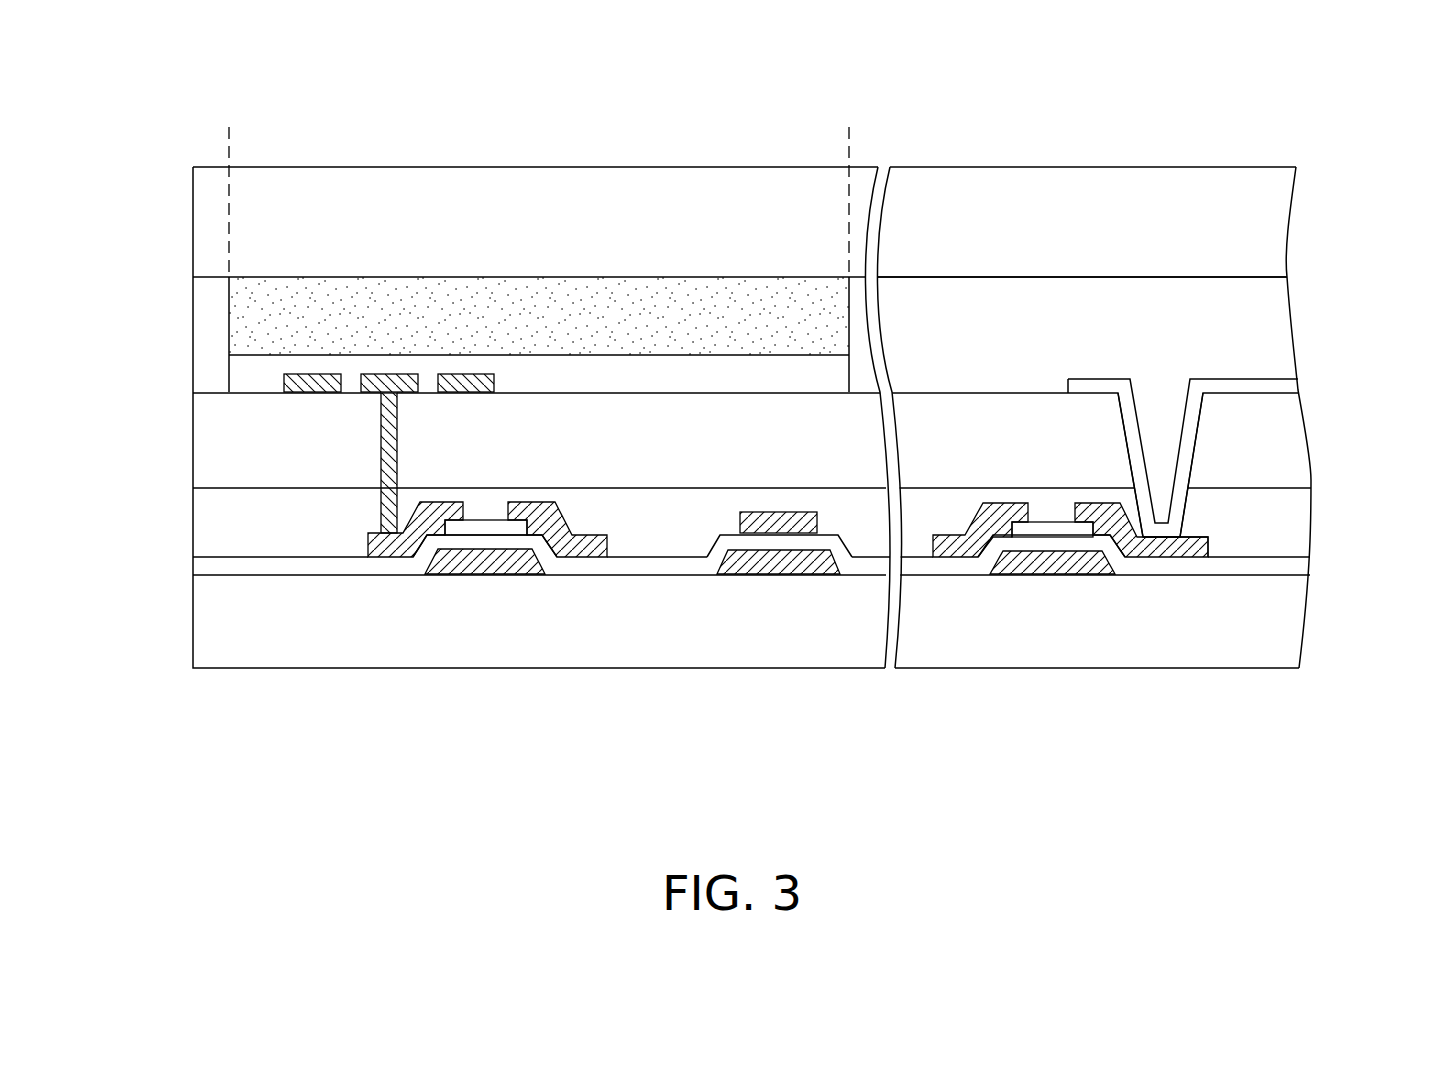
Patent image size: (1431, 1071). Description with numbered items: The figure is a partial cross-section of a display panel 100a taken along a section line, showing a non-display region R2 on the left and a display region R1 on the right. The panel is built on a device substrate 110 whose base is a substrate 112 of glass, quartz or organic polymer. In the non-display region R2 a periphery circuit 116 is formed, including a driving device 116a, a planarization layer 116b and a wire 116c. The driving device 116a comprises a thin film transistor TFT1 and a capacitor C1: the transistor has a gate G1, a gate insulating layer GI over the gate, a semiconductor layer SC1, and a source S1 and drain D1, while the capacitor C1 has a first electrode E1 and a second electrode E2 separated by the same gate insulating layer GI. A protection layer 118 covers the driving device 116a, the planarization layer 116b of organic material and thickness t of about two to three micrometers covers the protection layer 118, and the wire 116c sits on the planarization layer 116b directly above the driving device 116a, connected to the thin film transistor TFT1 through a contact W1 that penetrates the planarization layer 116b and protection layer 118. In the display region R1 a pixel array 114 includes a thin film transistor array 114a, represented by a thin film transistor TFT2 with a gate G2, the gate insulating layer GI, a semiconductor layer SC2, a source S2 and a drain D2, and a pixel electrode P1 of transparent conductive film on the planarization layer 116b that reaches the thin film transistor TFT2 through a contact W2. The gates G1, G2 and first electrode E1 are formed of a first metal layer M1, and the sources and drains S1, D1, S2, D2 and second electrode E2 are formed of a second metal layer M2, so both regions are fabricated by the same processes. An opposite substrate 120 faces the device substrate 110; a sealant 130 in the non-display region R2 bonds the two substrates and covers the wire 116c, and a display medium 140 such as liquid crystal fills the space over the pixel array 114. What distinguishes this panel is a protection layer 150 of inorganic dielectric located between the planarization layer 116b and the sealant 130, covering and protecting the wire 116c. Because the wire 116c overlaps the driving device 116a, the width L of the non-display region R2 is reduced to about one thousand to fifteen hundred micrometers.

The display panel 100a is at (775, 476).
The device substrate 110 is at (751, 636).
The substrate 112 is at (227, 637).
The protection layer 118 is at (263, 543).
The periphery circuit 116 is at (539, 612).
The driving device 116a is at (604, 654).
The planarization layer 116b is at (290, 468).
The wire 116c is at (362, 393).
The contact W1 is at (372, 442).
The thin film transistor TFT1 is at (505, 632).
The drain D1 is at (392, 550).
The gate G1 is at (457, 565).
The semiconductor layer SC1 is at (492, 527).
The source S1 is at (574, 606).
The gate insulating layer GI is at (553, 565).
The capacitor C1 is at (751, 636).
The first electrode E1 is at (772, 565).
The second electrode E2 is at (807, 523).
The thin film transistor TFT2 is at (1068, 640).
The drain D2 is at (952, 550).
The gate G2 is at (1008, 567).
The semiconductor layer SC2 is at (1045, 530).
The source S2 is at (1141, 607).
The opposite substrate 120 is at (207, 222).
The sealant 130 is at (240, 313).
The protection layer 150 is at (243, 377).
The display medium 140 is at (1270, 320).
The pixel array 114 is at (1156, 446).
The thin film transistor array 114a is at (1254, 511).
The pixel electrode P1 is at (1285, 388).
The contact W2 is at (1195, 422).
The width L is at (849, 147).
The thickness t is at (692, 393).
The display region R1 is at (1296, 121).
The non-display region R2 is at (878, 121).
The first metal layer M1 is at (1186, 852).
The second metal layer M2 is at (1281, 898).